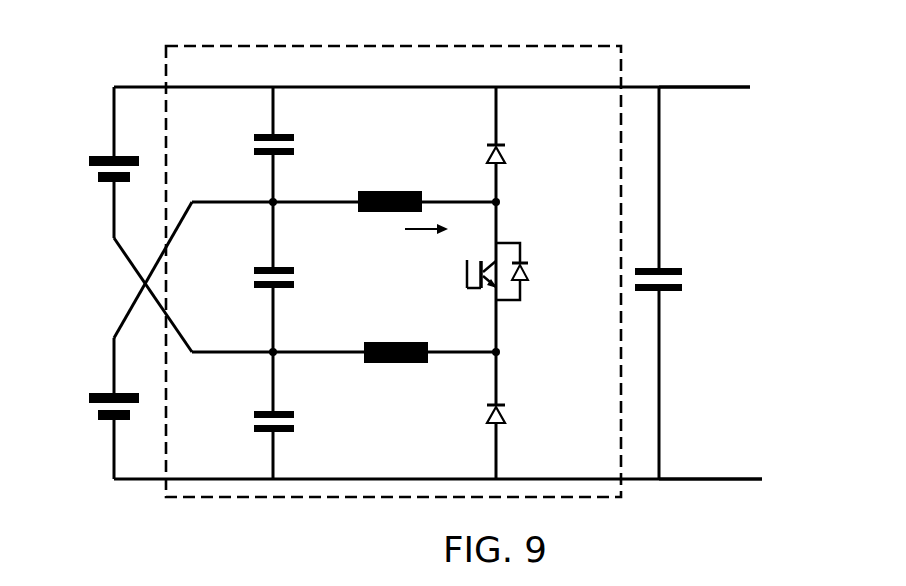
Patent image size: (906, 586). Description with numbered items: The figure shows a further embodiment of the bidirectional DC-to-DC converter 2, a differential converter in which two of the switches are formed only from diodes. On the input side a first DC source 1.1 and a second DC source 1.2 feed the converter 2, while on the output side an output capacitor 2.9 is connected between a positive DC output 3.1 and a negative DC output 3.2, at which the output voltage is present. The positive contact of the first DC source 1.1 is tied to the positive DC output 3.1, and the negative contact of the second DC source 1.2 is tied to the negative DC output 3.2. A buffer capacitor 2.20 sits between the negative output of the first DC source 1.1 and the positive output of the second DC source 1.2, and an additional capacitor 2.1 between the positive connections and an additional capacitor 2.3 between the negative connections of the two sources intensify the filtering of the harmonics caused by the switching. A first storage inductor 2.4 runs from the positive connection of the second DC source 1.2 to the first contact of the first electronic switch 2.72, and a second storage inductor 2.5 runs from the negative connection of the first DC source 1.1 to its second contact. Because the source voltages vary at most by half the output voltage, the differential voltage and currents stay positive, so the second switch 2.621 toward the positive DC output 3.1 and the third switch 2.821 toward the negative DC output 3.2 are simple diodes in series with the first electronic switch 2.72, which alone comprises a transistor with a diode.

The bidirectional DC-to-DC converter 2 is at (378, 249).
The first DC source 1.1 is at (90, 133).
The second DC source 1.2 is at (90, 372).
The additional capacitor 2.1 is at (242, 126).
The buffer capacitor 2.20 is at (237, 261).
The additional capacitor 2.3 is at (241, 426).
The first storage inductor 2.4 is at (379, 174).
The second storage inductor 2.5 is at (386, 322).
The second switch 2.621 is at (543, 135).
The first electronic switch 2.72 is at (555, 244).
The third switch 2.821 is at (546, 388).
The output capacitor 2.9 is at (700, 255).
The positive DC output 3.1 is at (704, 112).
The negative DC output 3.2 is at (710, 449).